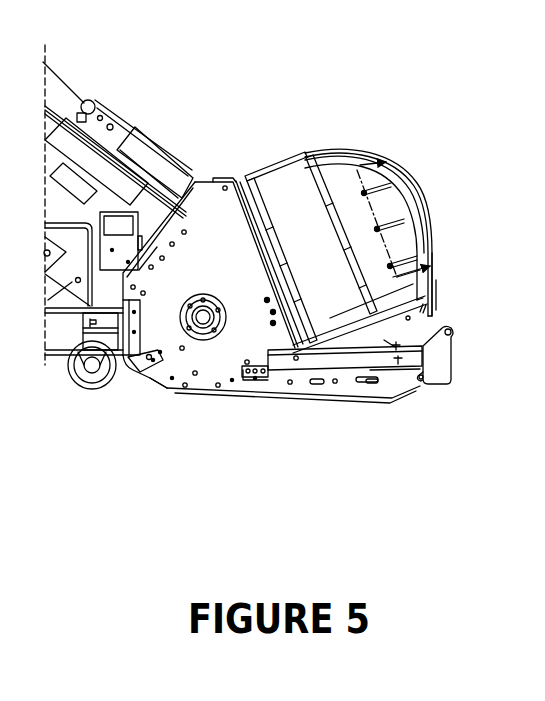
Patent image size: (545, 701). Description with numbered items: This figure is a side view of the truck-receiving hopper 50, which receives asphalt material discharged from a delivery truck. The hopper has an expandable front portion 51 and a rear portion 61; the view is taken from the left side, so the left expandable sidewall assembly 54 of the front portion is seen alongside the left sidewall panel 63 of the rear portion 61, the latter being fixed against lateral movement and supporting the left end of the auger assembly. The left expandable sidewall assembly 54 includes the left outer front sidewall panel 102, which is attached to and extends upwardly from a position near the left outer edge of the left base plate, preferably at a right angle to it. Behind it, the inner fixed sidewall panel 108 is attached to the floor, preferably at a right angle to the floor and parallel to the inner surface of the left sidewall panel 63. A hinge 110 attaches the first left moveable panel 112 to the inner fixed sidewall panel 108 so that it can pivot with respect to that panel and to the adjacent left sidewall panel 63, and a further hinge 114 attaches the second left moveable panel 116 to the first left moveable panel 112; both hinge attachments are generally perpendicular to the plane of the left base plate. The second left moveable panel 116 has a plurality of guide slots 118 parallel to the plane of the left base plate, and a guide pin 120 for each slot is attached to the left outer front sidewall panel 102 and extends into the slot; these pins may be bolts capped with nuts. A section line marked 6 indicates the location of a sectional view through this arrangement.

The truck-receiving hopper 50 is at (330, 426).
The expandable front portion 51 is at (362, 47).
The left expandable sidewall assembly 54 is at (356, 147).
The rear portion 61 is at (152, 400).
The left sidewall panel 63 is at (216, 272).
The left outer front sidewall panel 102 is at (420, 180).
The inner fixed sidewall panel 108 is at (245, 192).
The hinge 110 is at (272, 268).
The first left moveable panel 112 is at (280, 200).
The hinge 114 is at (335, 246).
The second left moveable panel 116 is at (330, 173).
The guide slots 118 is at (410, 217).
The guide pin 120 is at (387, 267).
The section line 6- 6 is at (408, 208).